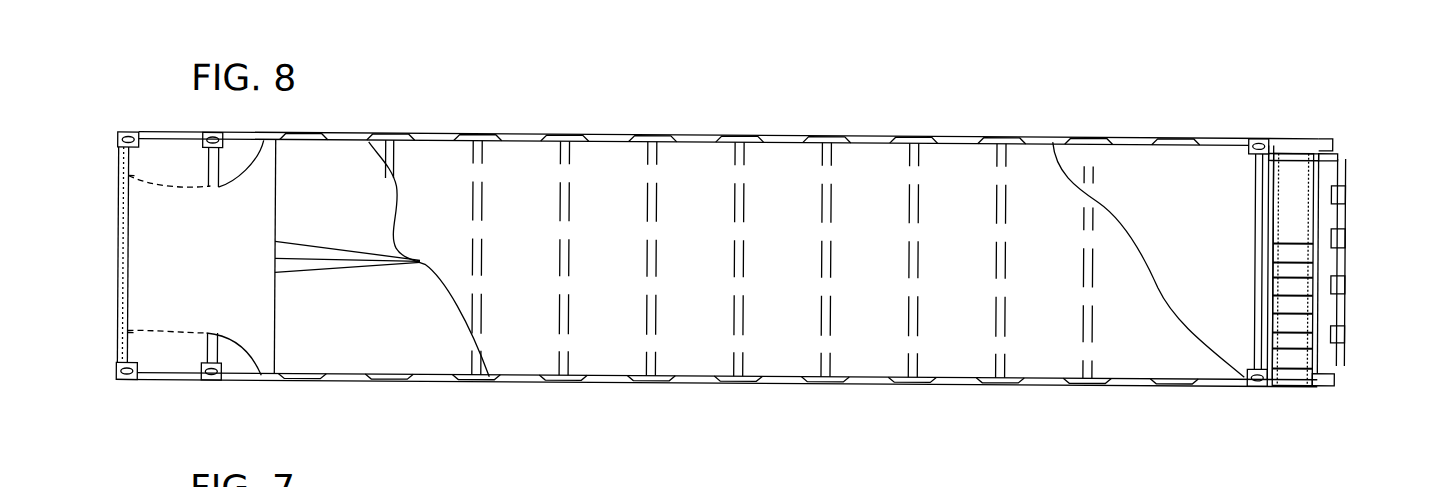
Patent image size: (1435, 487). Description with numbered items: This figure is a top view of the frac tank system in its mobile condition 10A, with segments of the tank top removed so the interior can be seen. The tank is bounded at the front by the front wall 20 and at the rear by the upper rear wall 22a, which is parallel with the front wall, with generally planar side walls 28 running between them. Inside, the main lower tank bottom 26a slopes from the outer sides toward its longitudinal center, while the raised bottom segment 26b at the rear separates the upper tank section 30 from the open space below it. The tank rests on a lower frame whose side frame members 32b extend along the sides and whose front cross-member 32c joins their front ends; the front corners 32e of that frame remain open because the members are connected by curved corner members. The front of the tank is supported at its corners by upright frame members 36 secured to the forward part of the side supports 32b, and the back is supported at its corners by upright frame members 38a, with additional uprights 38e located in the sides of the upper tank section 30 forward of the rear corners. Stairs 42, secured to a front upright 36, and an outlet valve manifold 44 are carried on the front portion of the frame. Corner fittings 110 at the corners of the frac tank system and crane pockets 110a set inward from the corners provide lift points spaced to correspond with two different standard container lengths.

The mobile condition of the frac tank system 10A is at (777, 128).
The front wall 20 is at (1257, 266).
The upper rear wall 22a is at (128, 228).
The lower tank bottom 26a is at (340, 246).
The raised bottom segment 26b is at (195, 300).
The side walls 28 is at (343, 145).
The upper tank section 30 is at (132, 259).
The side frame members 32b is at (1300, 134).
The front cross-member 32c is at (1348, 362).
The front corners of the lower frame 32e is at (1338, 144).
The upright frame members 36 is at (1258, 150).
The upright frame members 38a is at (125, 160).
The uprights 38e is at (218, 155).
The stairs 42 is at (1318, 147).
The outlet valve manifold 44 is at (1365, 172).
The corner fittings 110 is at (127, 136).
The crane pockets 110a is at (213, 136).